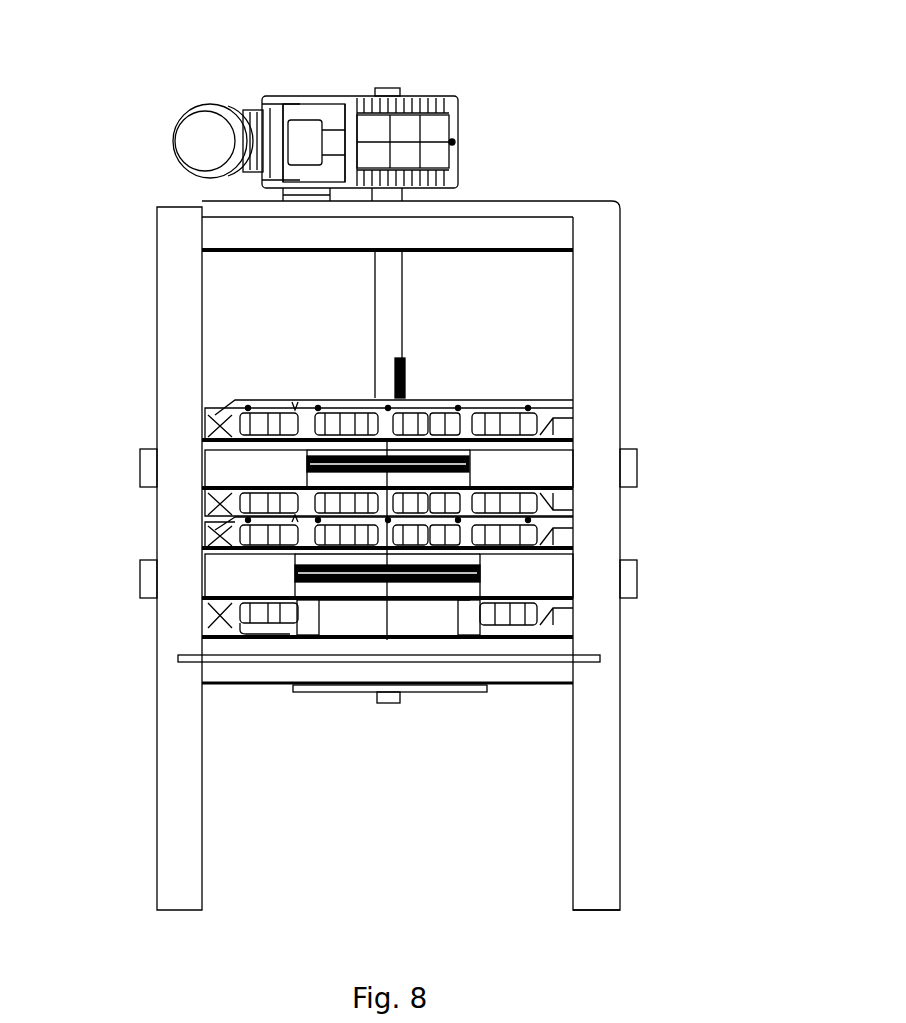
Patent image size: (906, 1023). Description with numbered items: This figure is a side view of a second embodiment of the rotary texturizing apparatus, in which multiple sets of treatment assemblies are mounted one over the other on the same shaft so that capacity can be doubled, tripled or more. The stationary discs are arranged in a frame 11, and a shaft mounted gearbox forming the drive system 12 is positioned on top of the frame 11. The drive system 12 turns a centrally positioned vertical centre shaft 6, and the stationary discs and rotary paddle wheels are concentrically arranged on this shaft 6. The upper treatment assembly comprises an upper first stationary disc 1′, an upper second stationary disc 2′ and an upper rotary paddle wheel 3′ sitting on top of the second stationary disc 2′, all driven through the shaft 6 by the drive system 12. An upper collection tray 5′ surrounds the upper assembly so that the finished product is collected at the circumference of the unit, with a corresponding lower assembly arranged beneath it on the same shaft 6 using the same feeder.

The shaft mounted gearbox 12 is at (136, 100).
The centre shaft 6 is at (403, 277).
The frame 11 is at (620, 360).
The upper rotary paddle wheel 3′ is at (455, 396).
The upper first stationary disc 1′ is at (577, 441).
The upper second stationary disc 2′ is at (577, 518).
The upper collection tray 5′ is at (637, 458).